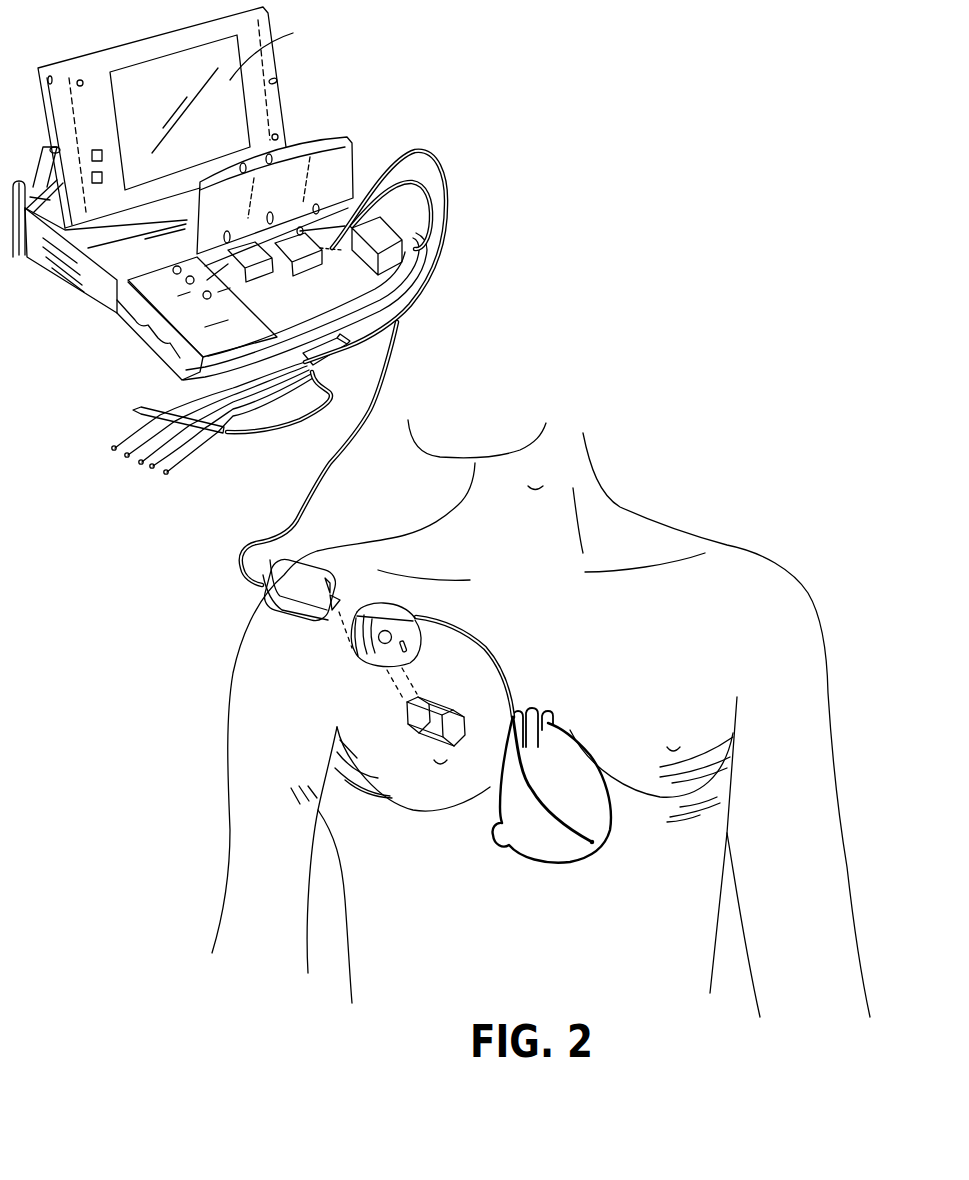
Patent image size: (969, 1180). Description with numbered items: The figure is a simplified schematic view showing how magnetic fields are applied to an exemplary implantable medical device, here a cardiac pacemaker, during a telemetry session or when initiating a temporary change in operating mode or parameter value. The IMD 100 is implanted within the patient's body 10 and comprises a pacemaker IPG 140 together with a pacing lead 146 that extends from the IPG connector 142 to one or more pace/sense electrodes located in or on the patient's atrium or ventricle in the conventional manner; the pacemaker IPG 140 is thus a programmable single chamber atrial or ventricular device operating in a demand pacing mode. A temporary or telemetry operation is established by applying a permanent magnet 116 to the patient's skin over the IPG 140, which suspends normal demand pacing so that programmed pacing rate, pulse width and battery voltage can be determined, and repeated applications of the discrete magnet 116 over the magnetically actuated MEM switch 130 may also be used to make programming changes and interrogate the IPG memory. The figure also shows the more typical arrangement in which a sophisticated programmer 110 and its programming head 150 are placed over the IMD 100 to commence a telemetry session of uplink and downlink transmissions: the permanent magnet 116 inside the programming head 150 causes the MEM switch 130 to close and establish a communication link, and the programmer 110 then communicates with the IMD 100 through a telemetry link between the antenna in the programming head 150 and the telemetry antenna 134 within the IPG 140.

The patient's body 10 is at (622, 507).
The IMD 100 is at (451, 713).
The programmer 110 is at (311, 84).
The permanent magnet 116 is at (430, 737).
The MEM switch 130 is at (410, 674).
The telemetry antenna 134 is at (376, 640).
The pacemaker IPG 140 is at (403, 655).
The IPG connector 142 is at (397, 608).
The pacing lead 146 is at (517, 697).
The programming head 150 is at (297, 570).